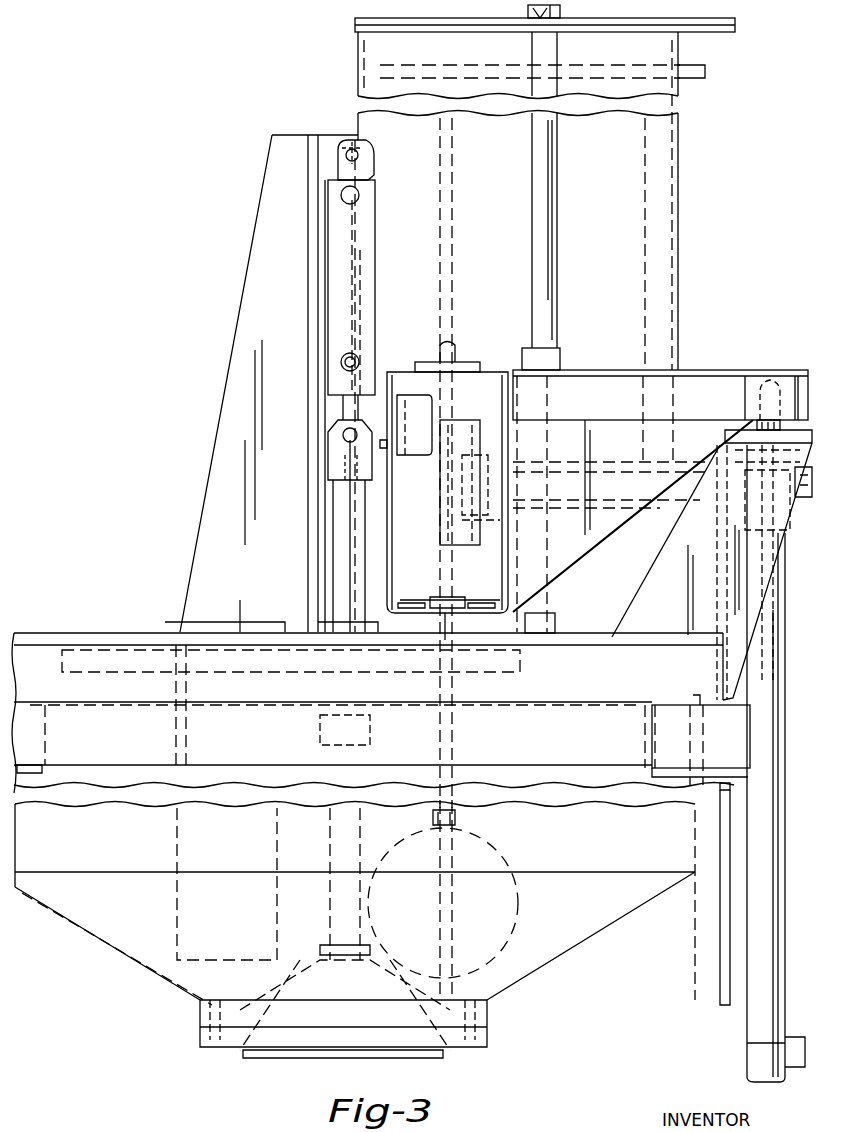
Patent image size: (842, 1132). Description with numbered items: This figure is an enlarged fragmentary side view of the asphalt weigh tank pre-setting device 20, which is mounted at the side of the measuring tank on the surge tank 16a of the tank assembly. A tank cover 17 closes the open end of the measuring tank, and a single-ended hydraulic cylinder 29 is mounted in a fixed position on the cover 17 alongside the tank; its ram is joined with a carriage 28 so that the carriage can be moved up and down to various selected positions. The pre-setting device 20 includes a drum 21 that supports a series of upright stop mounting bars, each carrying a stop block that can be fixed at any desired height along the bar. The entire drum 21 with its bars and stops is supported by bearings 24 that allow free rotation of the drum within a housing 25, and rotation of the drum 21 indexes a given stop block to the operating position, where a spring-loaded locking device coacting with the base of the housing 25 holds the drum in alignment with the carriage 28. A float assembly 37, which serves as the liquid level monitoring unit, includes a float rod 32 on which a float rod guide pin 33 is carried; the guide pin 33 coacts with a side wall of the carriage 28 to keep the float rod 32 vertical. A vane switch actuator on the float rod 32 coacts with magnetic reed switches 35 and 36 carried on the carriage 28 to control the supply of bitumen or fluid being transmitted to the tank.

The surge tank 16a is at (568, 905).
The tank cover 17 is at (48, 650).
The asphalt measuring tank pre-setting device 20 is at (683, 182).
The drum 21 is at (706, 74).
The bearings 24 is at (560, 14).
The housing 25 is at (695, 28).
The carriage 28 is at (718, 395).
The single-ended hydraulic cylinder 29 is at (773, 782).
The float rod 32 is at (458, 682).
The float rod guide pin 33 is at (443, 530).
The magnetic reed switch 35 is at (425, 407).
The magnetic reed switch 36 is at (470, 515).
The float assembly 37 is at (458, 820).